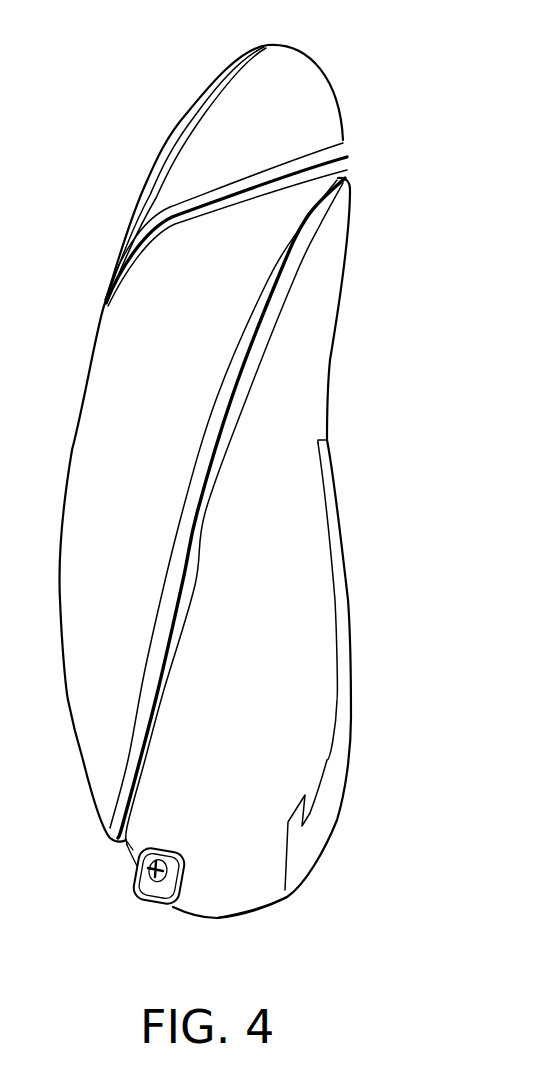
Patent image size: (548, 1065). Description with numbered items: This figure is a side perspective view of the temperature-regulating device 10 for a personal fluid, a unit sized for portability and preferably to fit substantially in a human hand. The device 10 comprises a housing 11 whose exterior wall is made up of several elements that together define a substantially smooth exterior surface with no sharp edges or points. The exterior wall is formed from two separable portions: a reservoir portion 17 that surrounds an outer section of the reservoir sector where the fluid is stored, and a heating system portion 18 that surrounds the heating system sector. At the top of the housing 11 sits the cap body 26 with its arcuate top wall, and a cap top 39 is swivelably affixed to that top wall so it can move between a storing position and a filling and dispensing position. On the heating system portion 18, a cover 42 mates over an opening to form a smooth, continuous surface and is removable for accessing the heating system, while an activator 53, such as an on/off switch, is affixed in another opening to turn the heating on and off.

The temperature-regulating device 10 is at (440, 130).
The housing 11 is at (330, 352).
The reservoir portion 17 is at (199, 511).
The heating system portion 18 is at (234, 548).
The cap body 26 is at (226, 175).
The cap top 39 is at (175, 127).
The cover 42 is at (345, 675).
The activator 53 is at (143, 875).